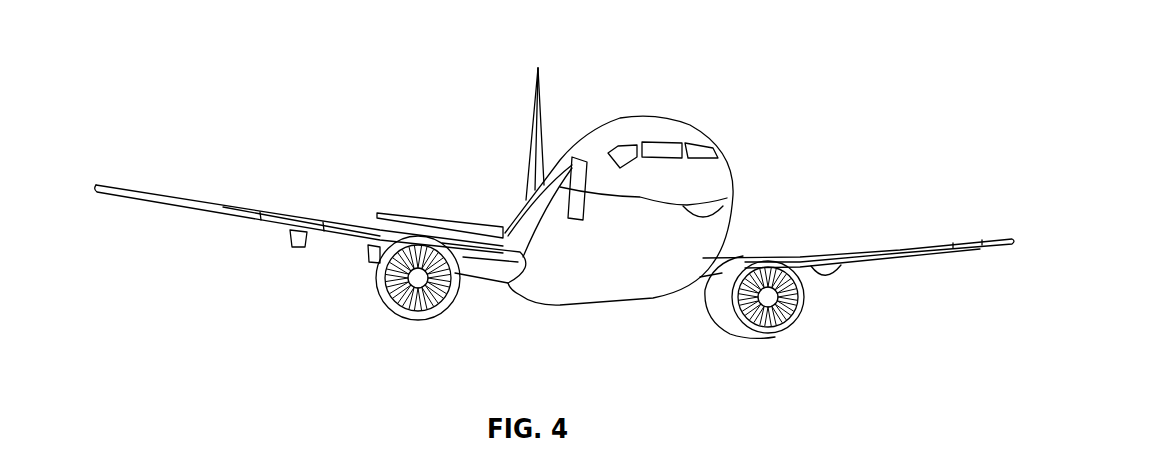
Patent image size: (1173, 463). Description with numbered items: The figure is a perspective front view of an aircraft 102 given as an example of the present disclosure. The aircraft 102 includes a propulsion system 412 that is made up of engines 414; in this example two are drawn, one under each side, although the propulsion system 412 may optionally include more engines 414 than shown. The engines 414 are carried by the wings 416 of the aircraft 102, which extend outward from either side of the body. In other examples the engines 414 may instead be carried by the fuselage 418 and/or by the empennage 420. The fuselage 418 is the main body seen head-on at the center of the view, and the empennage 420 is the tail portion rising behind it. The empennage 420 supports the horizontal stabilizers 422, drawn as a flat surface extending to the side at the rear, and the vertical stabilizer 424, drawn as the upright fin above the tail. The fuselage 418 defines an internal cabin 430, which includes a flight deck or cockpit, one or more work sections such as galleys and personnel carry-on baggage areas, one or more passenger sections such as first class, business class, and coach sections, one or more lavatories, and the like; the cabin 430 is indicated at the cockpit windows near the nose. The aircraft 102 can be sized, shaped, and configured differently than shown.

The aircraft 102 is at (328, 70).
The propulsion system 412 is at (358, 303).
The engines 414 is at (415, 320).
The wings 416 is at (218, 205).
The fuselage 418 is at (733, 172).
The empennage 420 is at (525, 200).
The horizontal stabilizers 422 is at (410, 215).
The vertical stabilizer 424 is at (533, 104).
The internal cabin 430 is at (662, 147).